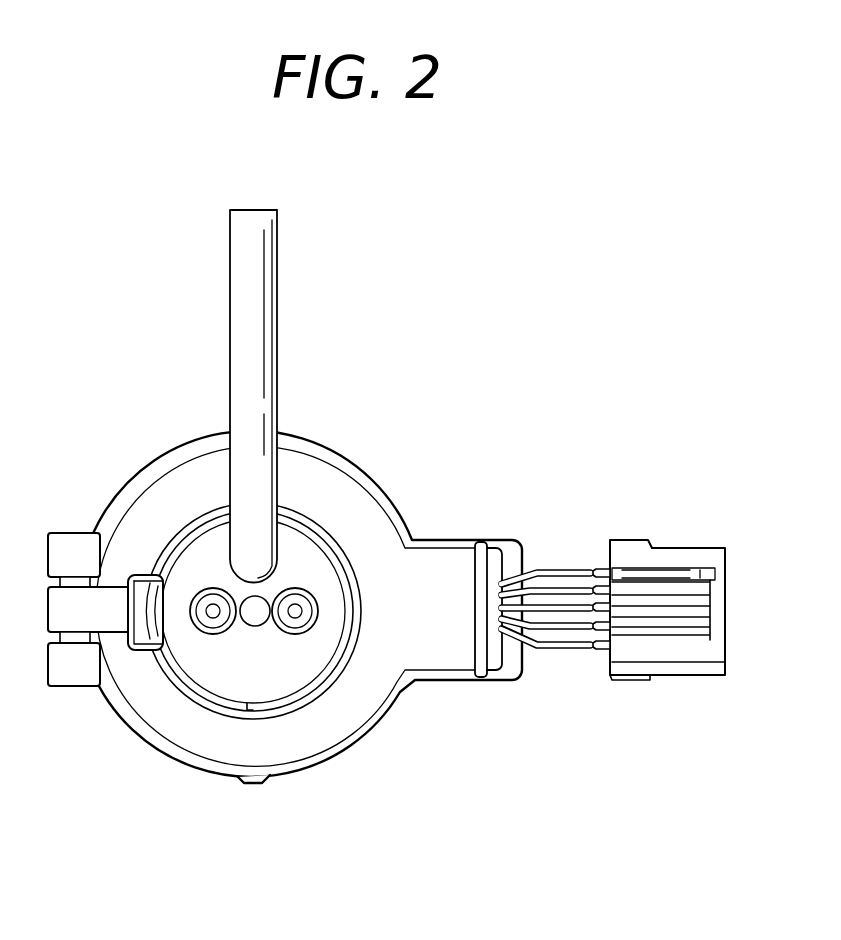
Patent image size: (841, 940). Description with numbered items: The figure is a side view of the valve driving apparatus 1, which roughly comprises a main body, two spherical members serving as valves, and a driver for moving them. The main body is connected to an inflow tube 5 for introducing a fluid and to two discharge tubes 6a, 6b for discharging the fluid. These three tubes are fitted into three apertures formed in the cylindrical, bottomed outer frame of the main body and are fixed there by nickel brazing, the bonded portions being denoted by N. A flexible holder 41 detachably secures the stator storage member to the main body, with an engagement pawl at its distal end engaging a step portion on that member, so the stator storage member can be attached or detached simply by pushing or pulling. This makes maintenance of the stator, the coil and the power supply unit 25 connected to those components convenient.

The valve driving apparatus 1 is at (403, 392).
The inflow tube 5 is at (257, 323).
The bonded portion N is at (323, 521).
The discharge tube 6a is at (318, 600).
The discharge tube 6b is at (205, 630).
The flexible holder 41 is at (143, 576).
The power supply unit 25 is at (668, 650).